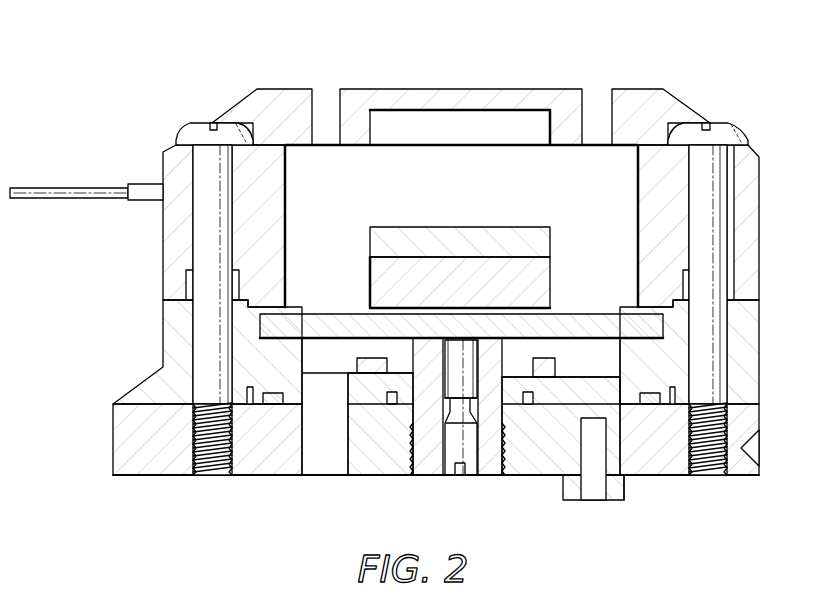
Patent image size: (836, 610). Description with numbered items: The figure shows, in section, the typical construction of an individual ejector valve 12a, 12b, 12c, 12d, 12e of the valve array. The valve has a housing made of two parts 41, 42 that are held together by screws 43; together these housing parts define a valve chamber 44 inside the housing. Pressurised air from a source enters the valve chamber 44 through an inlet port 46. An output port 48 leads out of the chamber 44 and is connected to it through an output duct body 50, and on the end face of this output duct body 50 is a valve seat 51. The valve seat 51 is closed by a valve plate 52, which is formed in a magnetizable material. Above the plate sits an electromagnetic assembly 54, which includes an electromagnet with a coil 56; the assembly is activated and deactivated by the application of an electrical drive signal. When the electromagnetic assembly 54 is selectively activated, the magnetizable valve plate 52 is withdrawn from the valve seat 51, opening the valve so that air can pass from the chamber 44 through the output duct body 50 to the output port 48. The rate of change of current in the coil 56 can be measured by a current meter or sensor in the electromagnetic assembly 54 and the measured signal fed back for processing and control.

The ejector valve 12a is at (406, 270).
The ejector valve 12b is at (406, 270).
The ejector valve 12c is at (406, 270).
The ejector valve 12d is at (406, 270).
The ejector valve 12e is at (406, 270).
The housing part 41 is at (638, 95).
The housing part 42 is at (135, 393).
The screws 43 is at (200, 241).
The valve chamber 44 is at (604, 358).
The inlet port 46 is at (323, 475).
The output port 48 is at (447, 475).
The output duct body 50 is at (500, 413).
The valve seat 51 is at (416, 420).
The valve plate 52 is at (573, 322).
The electromagnetic assembly 54 is at (372, 273).
The coil 56 is at (458, 262).